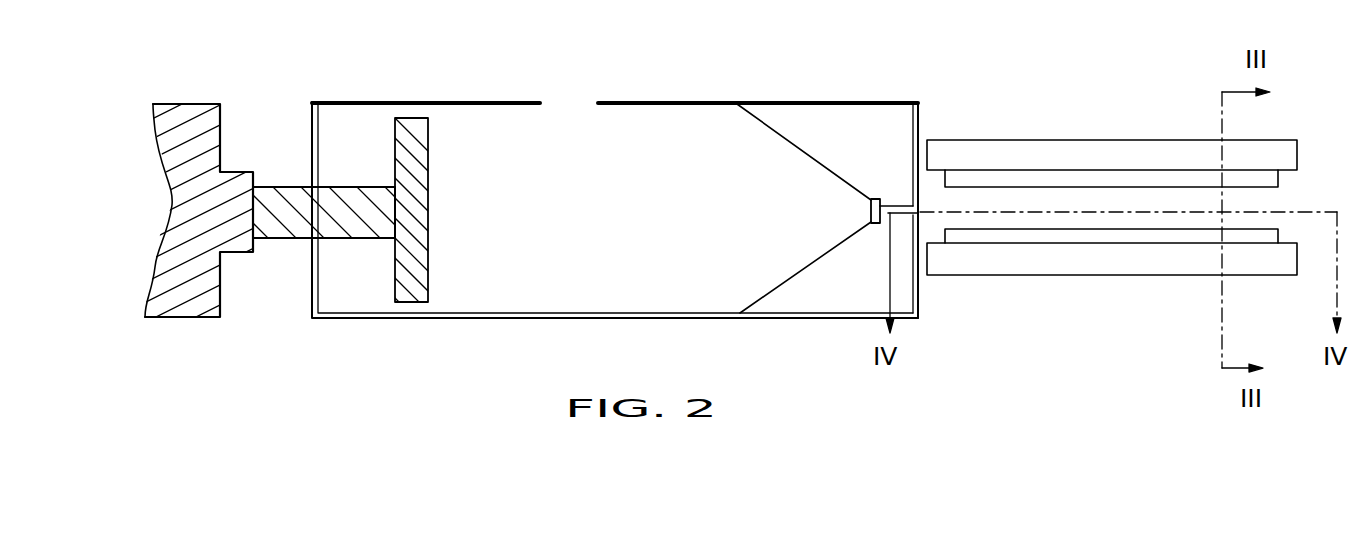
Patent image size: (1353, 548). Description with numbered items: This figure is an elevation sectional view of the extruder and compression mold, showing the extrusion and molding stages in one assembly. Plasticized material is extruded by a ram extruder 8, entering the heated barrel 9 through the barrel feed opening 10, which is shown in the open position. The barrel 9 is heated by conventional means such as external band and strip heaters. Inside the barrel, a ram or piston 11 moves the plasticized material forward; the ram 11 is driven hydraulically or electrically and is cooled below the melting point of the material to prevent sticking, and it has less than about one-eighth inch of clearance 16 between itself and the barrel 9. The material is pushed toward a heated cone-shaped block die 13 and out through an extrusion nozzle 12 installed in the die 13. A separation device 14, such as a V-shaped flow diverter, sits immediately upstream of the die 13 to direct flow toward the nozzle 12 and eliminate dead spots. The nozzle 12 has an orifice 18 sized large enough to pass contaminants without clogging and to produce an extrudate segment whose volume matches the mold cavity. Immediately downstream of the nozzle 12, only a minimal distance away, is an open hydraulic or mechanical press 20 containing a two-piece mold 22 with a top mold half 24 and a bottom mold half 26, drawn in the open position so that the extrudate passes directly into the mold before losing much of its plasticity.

The ram extruder 8 is at (420, 348).
The heated barrel 9 is at (517, 316).
The barrel feed opening 10 is at (568, 100).
The ram or piston 11 is at (403, 148).
The extrusion nozzle 12 is at (905, 218).
The cone-shaped block die 13 is at (822, 296).
The separation device 14 is at (878, 198).
The clearance 16 is at (410, 113).
The orifice 18 is at (918, 208).
The hydraulic or mechanical press 20 is at (1072, 298).
The two-piece mold 22 is at (1160, 256).
The top mold half 24 is at (973, 178).
The bottom mold half 26 is at (1207, 239).